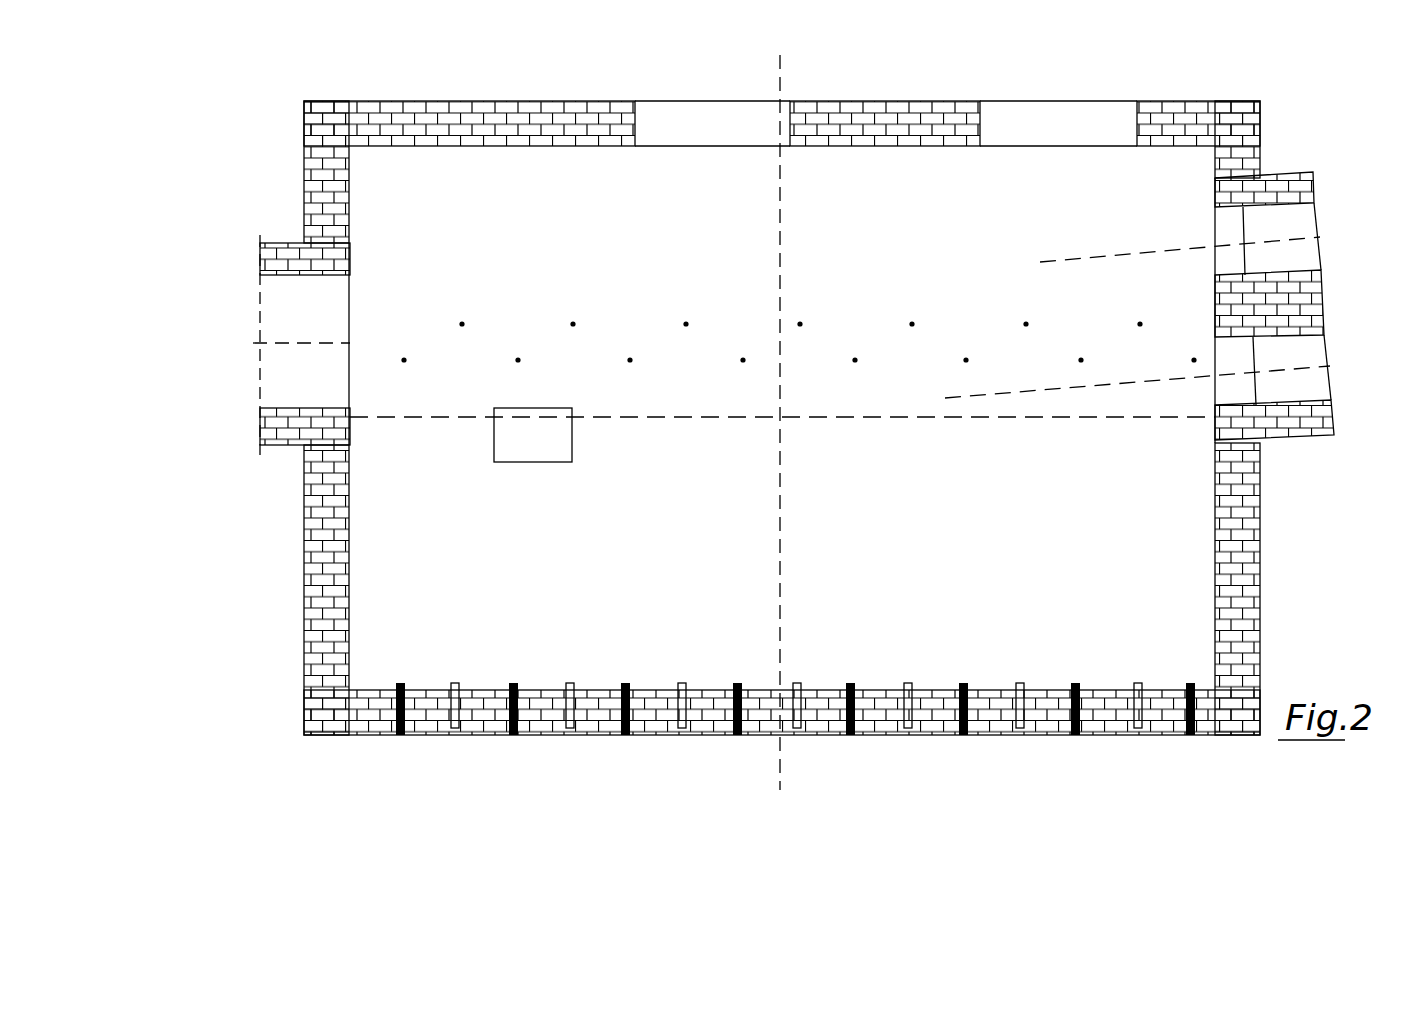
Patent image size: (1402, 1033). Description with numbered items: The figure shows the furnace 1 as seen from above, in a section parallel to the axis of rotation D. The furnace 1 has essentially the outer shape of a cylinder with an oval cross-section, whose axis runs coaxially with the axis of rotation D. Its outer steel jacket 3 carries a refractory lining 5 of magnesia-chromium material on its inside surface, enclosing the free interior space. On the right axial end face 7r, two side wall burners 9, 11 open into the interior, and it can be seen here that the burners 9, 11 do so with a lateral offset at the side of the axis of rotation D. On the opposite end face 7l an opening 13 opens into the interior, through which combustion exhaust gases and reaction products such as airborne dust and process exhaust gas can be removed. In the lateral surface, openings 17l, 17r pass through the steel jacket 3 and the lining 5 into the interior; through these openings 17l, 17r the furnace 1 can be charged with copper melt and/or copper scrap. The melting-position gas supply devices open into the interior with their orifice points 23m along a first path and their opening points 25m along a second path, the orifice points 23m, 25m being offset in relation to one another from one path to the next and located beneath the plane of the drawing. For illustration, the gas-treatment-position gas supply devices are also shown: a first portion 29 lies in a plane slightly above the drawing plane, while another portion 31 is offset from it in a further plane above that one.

The furnace 1 is at (203, 583).
The outer steel jacket 3 is at (538, 100).
The refractory lining 5 is at (905, 122).
The axial end face (left) 7l is at (382, 559).
The axial end face (right) 7r is at (1148, 549).
The side wall burner 9 is at (1300, 223).
The side wall burner 11 is at (1303, 358).
The opening 13 is at (290, 308).
The opening 17l is at (712, 123).
The opening 17r is at (1058, 123).
The orifice points 23m is at (966, 363).
The opening points 25m is at (673, 320).
The gas-treatment-position gas supply devices 29 is at (845, 737).
The gas-treatment-position gas supply devices 31 is at (1138, 738).
The axis of rotation D is at (661, 418).